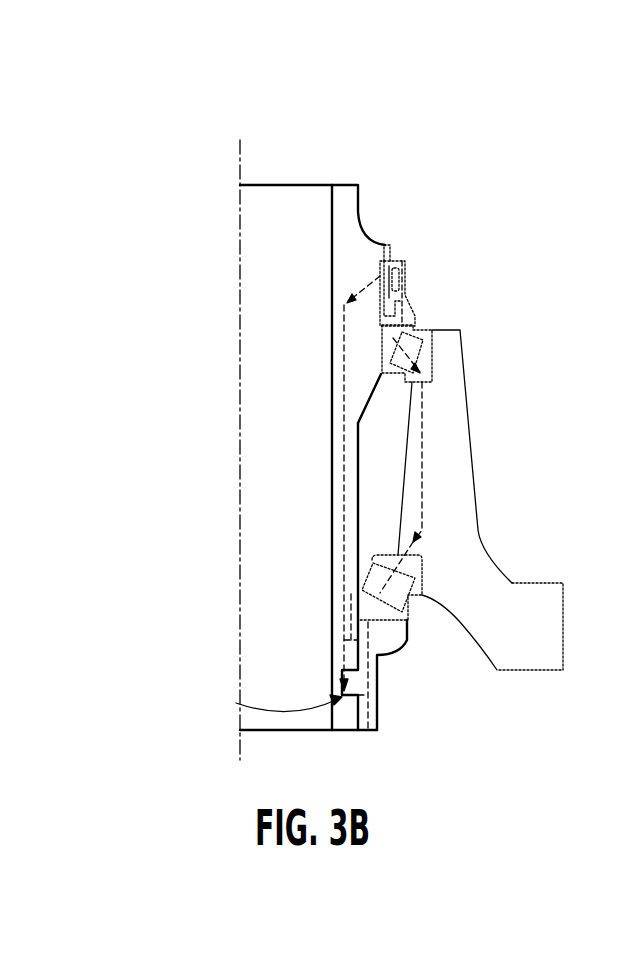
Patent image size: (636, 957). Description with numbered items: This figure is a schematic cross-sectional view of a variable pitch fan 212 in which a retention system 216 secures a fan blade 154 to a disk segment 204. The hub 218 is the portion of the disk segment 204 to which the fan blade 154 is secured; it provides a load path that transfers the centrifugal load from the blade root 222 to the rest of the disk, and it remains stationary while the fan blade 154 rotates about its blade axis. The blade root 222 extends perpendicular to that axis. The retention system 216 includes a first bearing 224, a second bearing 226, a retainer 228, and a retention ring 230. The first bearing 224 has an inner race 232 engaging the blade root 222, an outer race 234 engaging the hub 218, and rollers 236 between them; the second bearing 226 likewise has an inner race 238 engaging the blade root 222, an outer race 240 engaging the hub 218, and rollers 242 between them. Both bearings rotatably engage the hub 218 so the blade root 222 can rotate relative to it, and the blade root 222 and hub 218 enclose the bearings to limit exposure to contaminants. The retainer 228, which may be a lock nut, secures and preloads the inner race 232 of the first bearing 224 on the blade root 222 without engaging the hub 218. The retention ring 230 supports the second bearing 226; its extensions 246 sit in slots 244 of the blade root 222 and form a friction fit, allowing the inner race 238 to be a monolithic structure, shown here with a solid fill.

The variable pitch fan 212 is at (201, 148).
The fan blade 154 is at (352, 202).
The blade root 222 is at (331, 714).
The retainer 228 is at (386, 272).
The retention system 216 is at (460, 273).
The inner race 232 is at (390, 333).
The first bearing 224 is at (414, 346).
The outer race 234 is at (428, 356).
The disk segment 204 is at (456, 440).
The rollers 236 is at (392, 365).
The outer race 240 is at (408, 560).
The hub 218 is at (522, 598).
The second bearing 226 is at (410, 606).
The rollers 242 is at (378, 592).
The inner race 238 is at (375, 607).
The retention ring 230 is at (368, 710).
The extensions 246 is at (355, 678).
The slots 244 is at (268, 702).